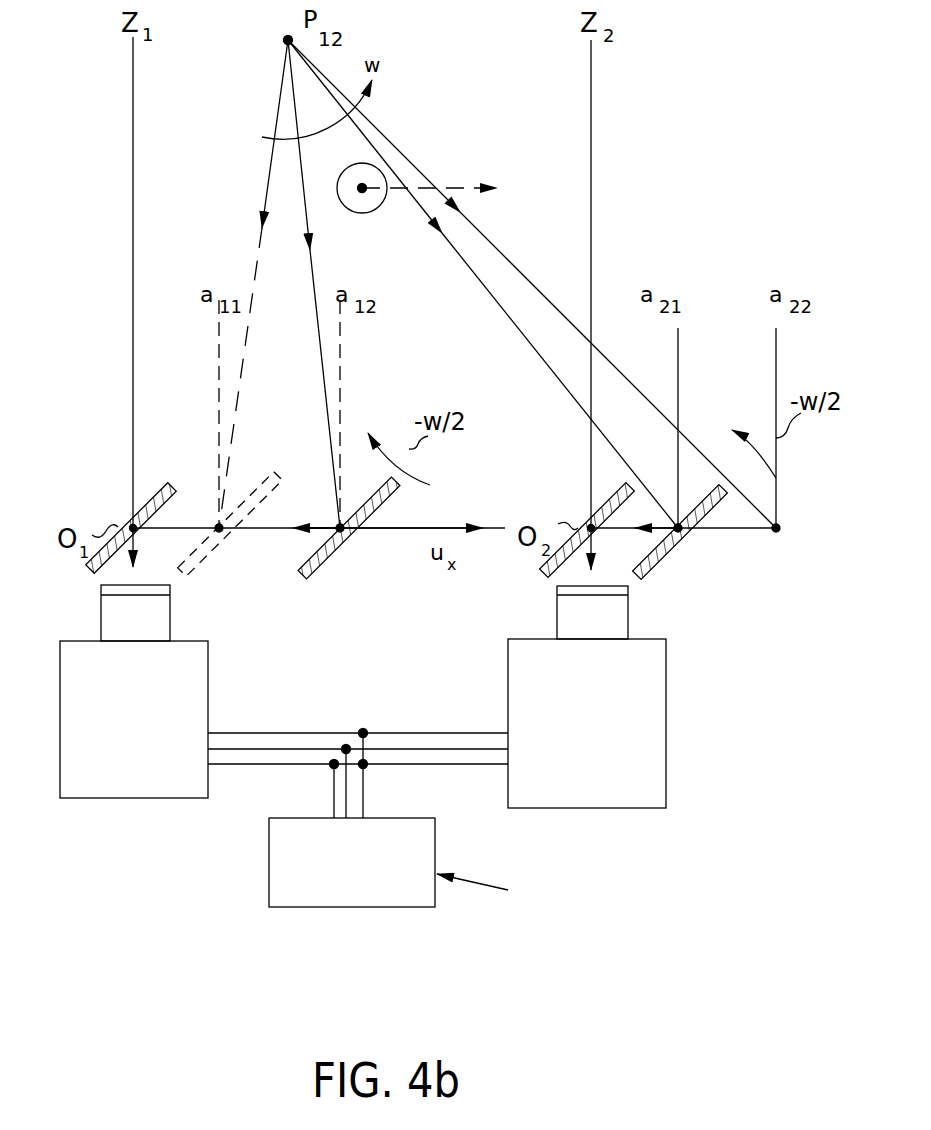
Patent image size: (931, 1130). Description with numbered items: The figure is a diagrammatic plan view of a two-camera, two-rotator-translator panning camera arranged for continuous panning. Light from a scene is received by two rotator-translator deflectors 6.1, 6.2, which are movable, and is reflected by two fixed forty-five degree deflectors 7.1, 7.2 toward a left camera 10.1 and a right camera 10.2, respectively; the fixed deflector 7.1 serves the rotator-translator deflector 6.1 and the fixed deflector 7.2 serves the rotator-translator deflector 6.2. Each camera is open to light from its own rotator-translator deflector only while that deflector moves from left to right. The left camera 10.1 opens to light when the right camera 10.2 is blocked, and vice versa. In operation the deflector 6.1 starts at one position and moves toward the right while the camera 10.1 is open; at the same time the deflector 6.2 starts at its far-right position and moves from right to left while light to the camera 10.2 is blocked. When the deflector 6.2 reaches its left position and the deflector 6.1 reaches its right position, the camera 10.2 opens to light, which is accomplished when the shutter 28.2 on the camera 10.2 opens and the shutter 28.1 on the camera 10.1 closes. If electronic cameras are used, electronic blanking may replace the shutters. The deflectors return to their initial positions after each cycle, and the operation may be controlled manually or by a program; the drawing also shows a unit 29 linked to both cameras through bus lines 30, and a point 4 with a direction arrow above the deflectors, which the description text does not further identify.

The scanning rotation axis / unit vector point 4 is at (373, 183).
The rotator-translator deflector 6.1 is at (250, 499).
The rotator-translator deflector 6.2 is at (715, 505).
The fixed 45° deflector 7.1 is at (132, 507).
The fixed 45° deflector 7.2 is at (589, 515).
The left camera 10.1 is at (134, 719).
The right camera 10.2 is at (587, 723).
The shutter 28.1 is at (171, 588).
The shutter 28.2 is at (628, 588).
The evaluation unit 29 is at (388, 862).
The connection bus lines 30 is at (395, 730).